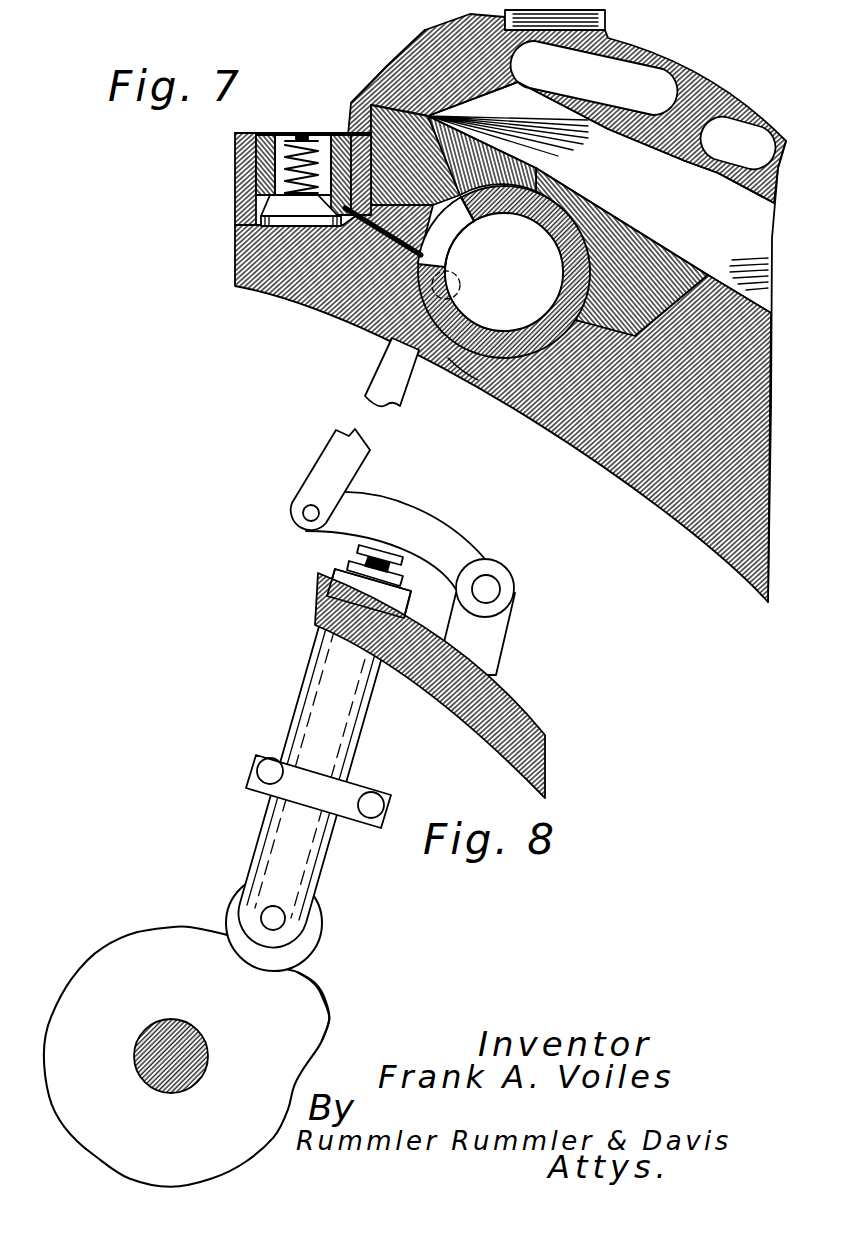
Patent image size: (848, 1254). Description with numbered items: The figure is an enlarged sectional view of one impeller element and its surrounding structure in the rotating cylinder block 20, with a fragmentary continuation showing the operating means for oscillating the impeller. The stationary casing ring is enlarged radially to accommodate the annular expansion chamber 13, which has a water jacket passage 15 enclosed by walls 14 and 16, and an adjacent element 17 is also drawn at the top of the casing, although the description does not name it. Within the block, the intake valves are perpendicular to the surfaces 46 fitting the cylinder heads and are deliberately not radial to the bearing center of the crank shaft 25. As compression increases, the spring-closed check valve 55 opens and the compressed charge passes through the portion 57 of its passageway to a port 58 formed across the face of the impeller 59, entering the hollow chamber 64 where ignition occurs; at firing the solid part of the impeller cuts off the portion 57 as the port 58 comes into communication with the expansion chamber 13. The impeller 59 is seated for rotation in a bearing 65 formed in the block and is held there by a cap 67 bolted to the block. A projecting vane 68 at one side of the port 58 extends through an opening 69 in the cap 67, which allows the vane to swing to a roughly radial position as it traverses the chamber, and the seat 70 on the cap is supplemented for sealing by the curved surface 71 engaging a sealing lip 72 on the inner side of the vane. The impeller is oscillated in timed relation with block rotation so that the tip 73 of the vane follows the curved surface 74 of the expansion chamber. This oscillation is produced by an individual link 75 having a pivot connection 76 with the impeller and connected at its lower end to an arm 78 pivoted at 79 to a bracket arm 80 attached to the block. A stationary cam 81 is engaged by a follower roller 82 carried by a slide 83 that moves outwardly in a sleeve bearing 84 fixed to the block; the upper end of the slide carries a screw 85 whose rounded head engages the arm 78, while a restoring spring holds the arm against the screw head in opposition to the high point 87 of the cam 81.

In FIG. 7, the annular expansion chamber 13 is at (598, 186).
In FIG. 7, the wall 14 is at (628, 103).
In FIG. 7, the water jacket passage 15 is at (612, 68).
In FIG. 7, the wall 16 is at (713, 87).
In FIG. 7, the cooling flange 17 is at (594, 14).
In FIG. 7, the cylindrical block 20 is at (614, 478).
In FIG. 8, the cylindrical block 20 is at (504, 766).
In FIG. 8, the crank shaft 25 is at (198, 1050).
In FIG. 7, the surfaces 46 is at (256, 126).
In FIG. 7, the spring-closed check valve 55 is at (253, 212).
In FIG. 7, the portion of passageway 57 is at (298, 290).
In FIG. 7, the port 58 is at (440, 238).
In FIG. 7, the impeller 59 is at (453, 360).
In FIG. 7, the hollow chamber 64 is at (504, 272).
In FIG. 7, the bearing 65 is at (482, 362).
In FIG. 7, the cap 67 is at (380, 113).
In FIG. 7, the projecting vane 68 is at (520, 148).
In FIG. 7, the opening 69 is at (587, 197).
In FIG. 7, the seat 70 is at (491, 159).
In FIG. 7, the curved surface 71 is at (446, 232).
In FIG. 7, the sealing lip 72 is at (468, 207).
In FIG. 7, the tip 73 is at (367, 65).
In FIG. 7, the curved surface 74 is at (530, 95).
In FIG. 7, the link 75 is at (390, 328).
In FIG. 8, the link 75 is at (316, 465).
In FIG. 7, the pivot connection 76 is at (447, 280).
In FIG. 8, the arm 78 is at (457, 540).
In FIG. 8, the pivot 79 is at (490, 578).
In FIG. 8, the bracket arm 80 is at (497, 623).
In FIG. 8, the stationary cam 81 is at (117, 943).
In FIG. 8, the follower roller 82 is at (316, 920).
In FIG. 8, the slide 83 is at (262, 865).
In FIG. 8, the sleeve bearing 84 is at (325, 843).
In FIG. 8, the screw 85 is at (372, 543).
In FIG. 8, the high point 87 is at (316, 1003).